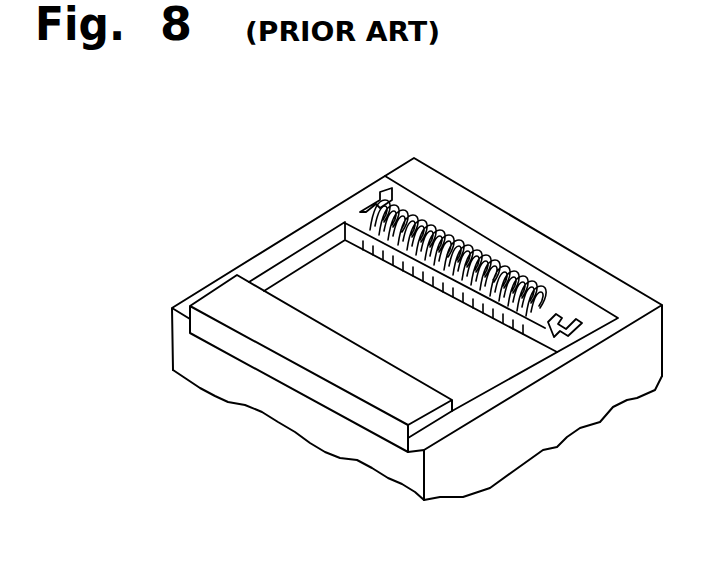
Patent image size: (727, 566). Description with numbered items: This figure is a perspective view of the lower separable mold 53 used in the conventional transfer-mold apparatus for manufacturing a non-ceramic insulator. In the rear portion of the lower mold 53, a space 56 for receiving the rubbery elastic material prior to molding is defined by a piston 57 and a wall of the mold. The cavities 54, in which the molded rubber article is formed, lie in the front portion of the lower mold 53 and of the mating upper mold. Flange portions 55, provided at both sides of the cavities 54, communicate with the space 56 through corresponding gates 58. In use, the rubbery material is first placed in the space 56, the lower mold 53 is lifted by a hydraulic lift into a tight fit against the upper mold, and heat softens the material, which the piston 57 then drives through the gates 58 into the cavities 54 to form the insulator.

The lower separable mold 53 is at (537, 447).
The cavities 54 is at (432, 208).
The flange portions 55 is at (468, 233).
The space 56 is at (317, 270).
The piston 57 is at (232, 300).
The gates 58 is at (445, 290).